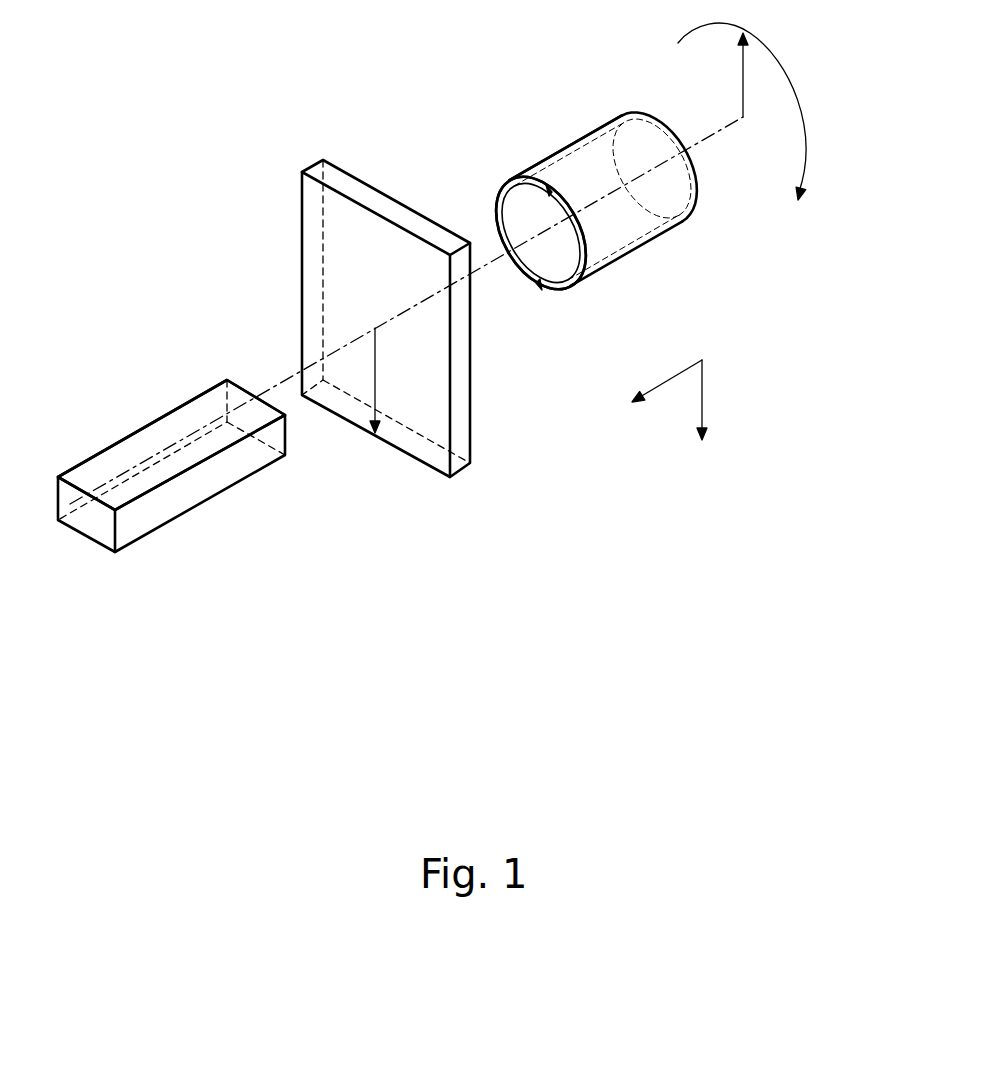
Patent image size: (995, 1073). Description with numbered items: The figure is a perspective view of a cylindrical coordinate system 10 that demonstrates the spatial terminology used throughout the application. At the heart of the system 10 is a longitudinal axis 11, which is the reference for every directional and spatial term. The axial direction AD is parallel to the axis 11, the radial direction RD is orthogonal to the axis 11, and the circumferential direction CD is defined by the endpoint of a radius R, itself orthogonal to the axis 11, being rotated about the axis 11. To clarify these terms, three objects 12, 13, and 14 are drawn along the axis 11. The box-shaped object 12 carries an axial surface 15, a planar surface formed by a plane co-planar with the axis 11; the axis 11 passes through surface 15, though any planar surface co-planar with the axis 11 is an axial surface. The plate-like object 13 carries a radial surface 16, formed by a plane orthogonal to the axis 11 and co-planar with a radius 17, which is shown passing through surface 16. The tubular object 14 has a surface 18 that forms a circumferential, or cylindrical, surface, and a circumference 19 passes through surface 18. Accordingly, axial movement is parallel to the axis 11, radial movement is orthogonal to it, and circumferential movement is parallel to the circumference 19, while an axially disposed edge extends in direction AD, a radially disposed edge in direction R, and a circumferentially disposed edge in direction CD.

The cylindrical coordinate system 10 is at (260, 205).
The longitudinal axis 11 is at (685, 147).
The object 12 is at (142, 540).
The object 13 is at (480, 468).
The object 14 is at (617, 263).
The axial surface 15 is at (135, 448).
The radial surface 16 is at (315, 278).
The radius 17 is at (375, 373).
The circumferential surface 18 is at (567, 147).
The circumference 19 is at (493, 200).
The radius R is at (742, 68).
The circumferential direction CD is at (777, 60).
The axial direction AD is at (667, 380).
The radial direction RD is at (702, 397).